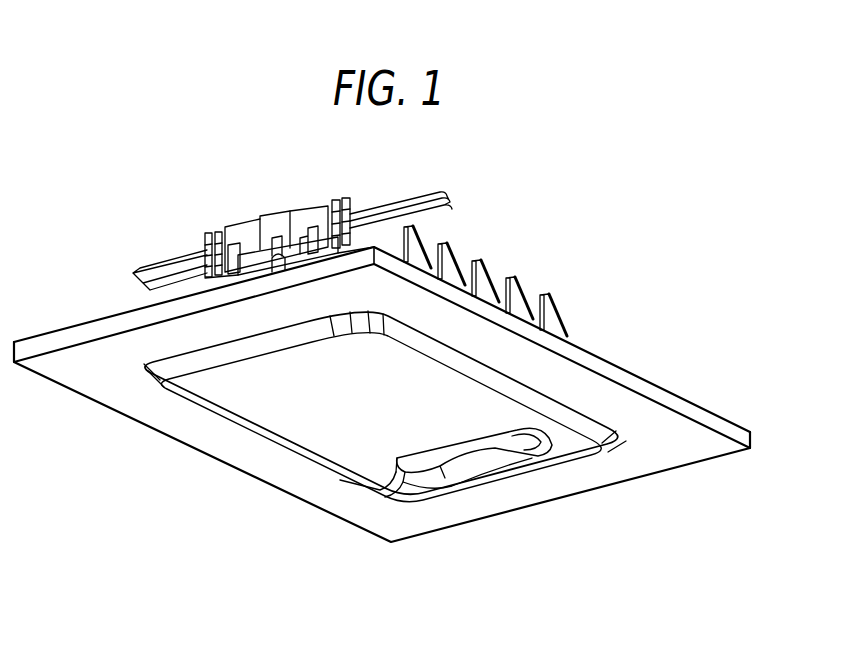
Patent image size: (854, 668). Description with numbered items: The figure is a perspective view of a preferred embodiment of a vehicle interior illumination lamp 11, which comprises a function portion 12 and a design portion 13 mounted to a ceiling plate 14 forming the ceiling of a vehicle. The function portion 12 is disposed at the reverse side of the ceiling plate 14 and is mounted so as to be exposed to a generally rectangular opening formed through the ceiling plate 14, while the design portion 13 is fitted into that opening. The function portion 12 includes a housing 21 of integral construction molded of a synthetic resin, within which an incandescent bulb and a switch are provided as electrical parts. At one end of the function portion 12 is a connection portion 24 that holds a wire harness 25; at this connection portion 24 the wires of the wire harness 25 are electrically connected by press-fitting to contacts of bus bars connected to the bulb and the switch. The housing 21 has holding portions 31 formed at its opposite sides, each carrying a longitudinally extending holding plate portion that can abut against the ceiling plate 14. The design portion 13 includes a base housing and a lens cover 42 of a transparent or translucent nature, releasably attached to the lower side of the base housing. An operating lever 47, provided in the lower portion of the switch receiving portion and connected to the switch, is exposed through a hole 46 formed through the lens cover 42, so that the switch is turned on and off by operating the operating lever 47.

The vehicle interior illumination lamp 11 is at (615, 288).
The function portion 12 is at (490, 254).
The design portion 13 is at (558, 452).
The ceiling plate 14 is at (627, 375).
The housing 21 is at (456, 236).
The connection portion 24 is at (270, 232).
The wire harness 25 is at (153, 270).
The holding portion 31 is at (553, 297).
The lens cover 42 is at (267, 398).
The hole 46 is at (385, 476).
The operating lever 47 is at (477, 460).